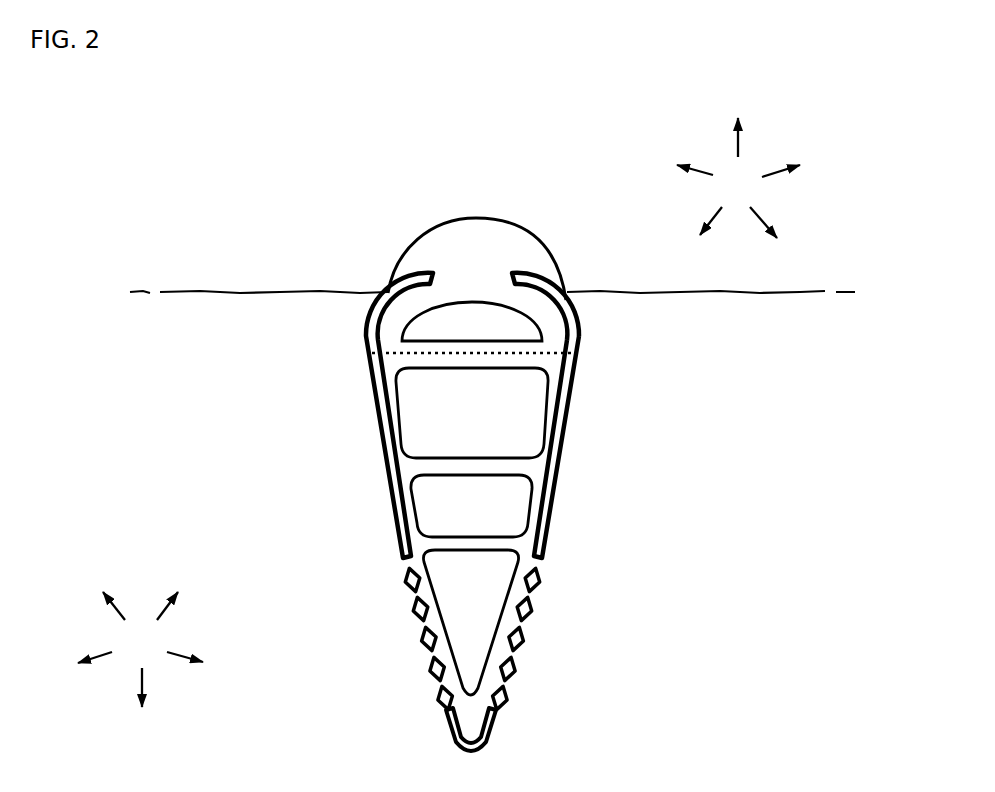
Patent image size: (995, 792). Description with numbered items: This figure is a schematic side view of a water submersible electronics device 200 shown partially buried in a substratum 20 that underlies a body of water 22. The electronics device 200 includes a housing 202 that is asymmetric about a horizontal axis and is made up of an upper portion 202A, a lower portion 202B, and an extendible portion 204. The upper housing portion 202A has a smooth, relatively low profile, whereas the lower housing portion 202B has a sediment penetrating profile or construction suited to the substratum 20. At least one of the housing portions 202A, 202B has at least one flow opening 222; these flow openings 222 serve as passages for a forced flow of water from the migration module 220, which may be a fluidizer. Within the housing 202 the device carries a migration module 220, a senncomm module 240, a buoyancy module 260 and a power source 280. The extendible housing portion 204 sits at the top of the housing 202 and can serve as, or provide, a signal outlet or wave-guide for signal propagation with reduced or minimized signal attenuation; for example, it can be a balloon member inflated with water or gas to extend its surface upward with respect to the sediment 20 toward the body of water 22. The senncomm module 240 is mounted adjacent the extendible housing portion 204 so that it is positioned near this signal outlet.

The electronics device 200 is at (337, 141).
The extendible housing portion 204 is at (530, 229).
The housing 202 is at (592, 353).
The upper housing portion 202A is at (580, 315).
The lower housing portion 202B is at (558, 475).
The flow opening 222 is at (462, 268).
The senncomm module 240 is at (468, 330).
The buoyancy module 260 is at (437, 417).
The power source 280 is at (448, 509).
The migration module 220 is at (470, 575).
The body of water 22 is at (738, 178).
The substratum 20 is at (140, 649).